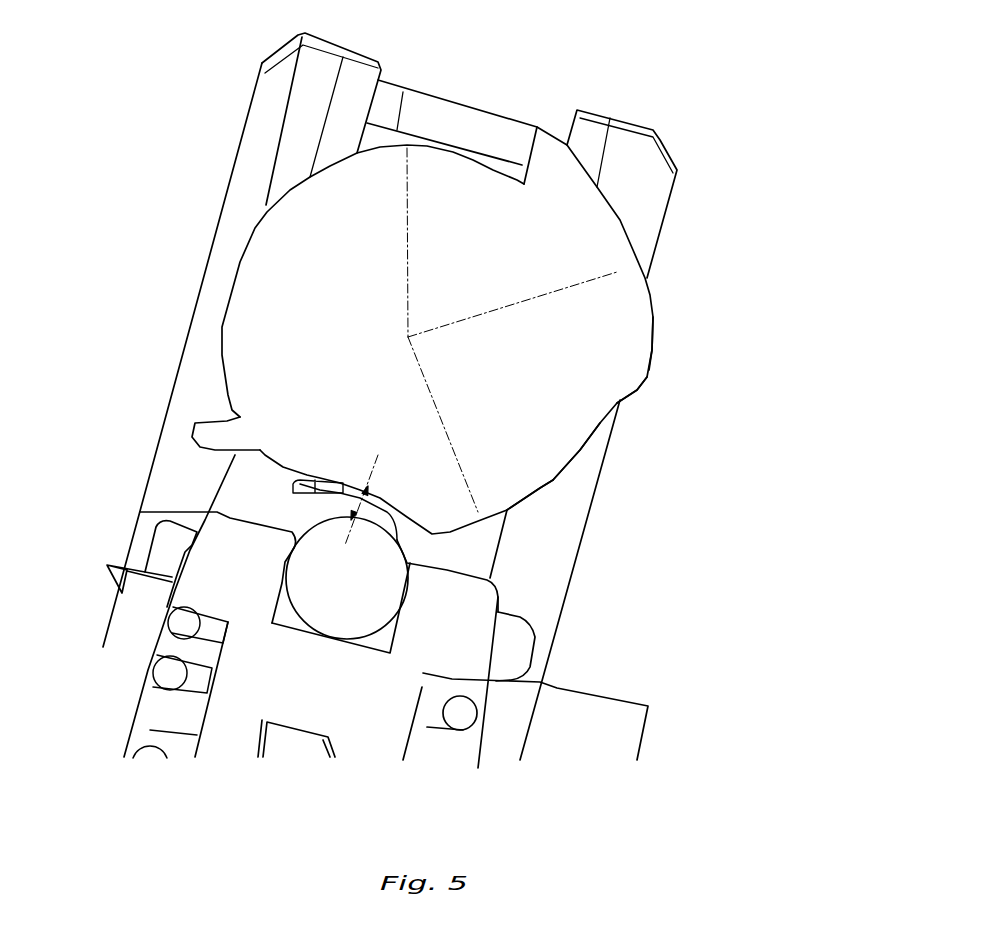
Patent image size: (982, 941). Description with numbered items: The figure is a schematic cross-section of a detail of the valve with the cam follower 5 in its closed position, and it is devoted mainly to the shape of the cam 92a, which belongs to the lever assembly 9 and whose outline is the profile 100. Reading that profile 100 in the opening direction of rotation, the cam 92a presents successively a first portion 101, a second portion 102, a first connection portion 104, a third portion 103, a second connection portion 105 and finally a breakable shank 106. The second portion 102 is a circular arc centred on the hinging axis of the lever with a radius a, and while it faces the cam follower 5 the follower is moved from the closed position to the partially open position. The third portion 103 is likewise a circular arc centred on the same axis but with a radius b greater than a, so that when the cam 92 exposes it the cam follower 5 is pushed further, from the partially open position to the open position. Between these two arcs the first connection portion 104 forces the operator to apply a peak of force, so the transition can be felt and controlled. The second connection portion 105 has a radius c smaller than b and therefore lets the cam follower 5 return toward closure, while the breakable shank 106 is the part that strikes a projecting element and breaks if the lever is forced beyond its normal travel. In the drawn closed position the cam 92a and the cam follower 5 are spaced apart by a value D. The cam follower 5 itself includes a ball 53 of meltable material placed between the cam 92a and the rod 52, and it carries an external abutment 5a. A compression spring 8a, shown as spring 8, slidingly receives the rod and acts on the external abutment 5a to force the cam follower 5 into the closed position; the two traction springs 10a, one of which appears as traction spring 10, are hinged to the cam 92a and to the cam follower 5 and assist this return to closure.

The lever assembly 9 is at (668, 298).
The profile 100 is at (236, 236).
The second connection portion 105 is at (263, 203).
The third portion 103 is at (637, 229).
The breakable shank 106 is at (205, 407).
The cam 92 is at (661, 357).
The first connection portion 104 is at (649, 392).
The cam 92a is at (543, 390).
The second portion 102 is at (549, 488).
The first portion 101 is at (391, 509).
The radius a is at (437, 407).
The radius b is at (548, 293).
The radius c is at (412, 220).
The spacing value D is at (358, 503).
The traction spring 10 is at (279, 488).
The traction springs 10a is at (282, 500).
The ball 53 is at (370, 578).
The cam follower 5 is at (447, 576).
The external abutment 5a is at (459, 675).
The compression spring 8 is at (470, 710).
The compression spring 8a is at (460, 717).
The rod 52 is at (243, 677).